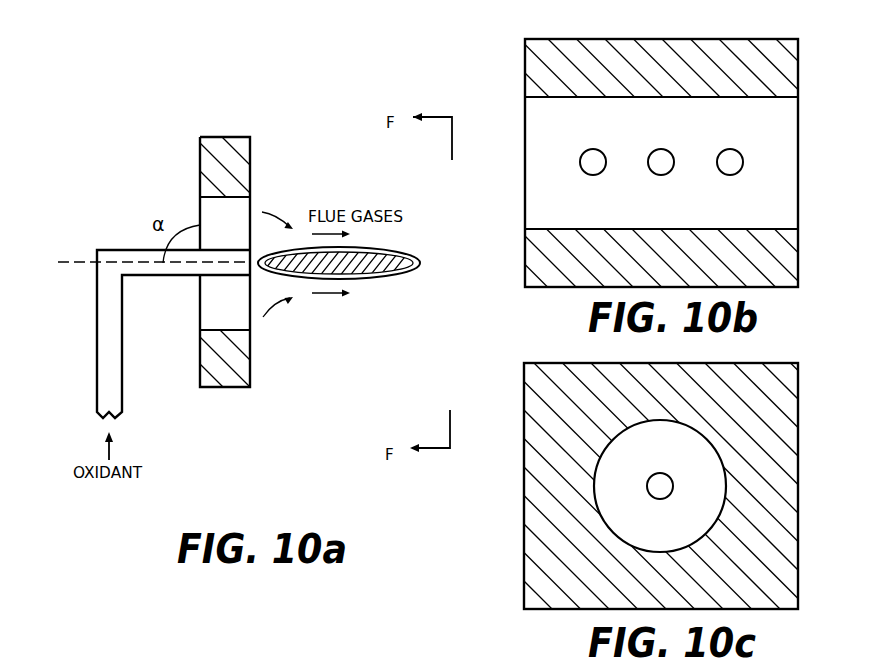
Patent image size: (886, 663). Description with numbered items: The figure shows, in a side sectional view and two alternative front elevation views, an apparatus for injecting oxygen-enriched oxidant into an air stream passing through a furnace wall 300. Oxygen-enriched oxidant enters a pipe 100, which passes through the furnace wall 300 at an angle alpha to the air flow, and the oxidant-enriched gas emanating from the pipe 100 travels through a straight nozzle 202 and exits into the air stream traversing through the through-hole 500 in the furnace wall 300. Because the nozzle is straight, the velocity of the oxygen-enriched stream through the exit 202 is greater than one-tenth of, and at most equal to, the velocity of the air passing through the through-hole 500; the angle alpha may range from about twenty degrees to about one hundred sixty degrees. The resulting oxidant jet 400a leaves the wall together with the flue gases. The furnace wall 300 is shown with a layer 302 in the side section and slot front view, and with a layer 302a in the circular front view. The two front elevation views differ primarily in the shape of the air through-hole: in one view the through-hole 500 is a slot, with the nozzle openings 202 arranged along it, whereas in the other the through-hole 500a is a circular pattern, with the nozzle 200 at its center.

In FIG. 10a, the pipe 100 is at (97, 333).
In FIG. 10c, the nozzle 200 is at (651, 476).
In FIG. 10a, the straight nozzle 202 is at (250, 250).
In FIG. 10b, the straight nozzle 202 is at (721, 152).
In FIG. 10a, the furnace wall 300 is at (222, 154).
In FIG. 10b, the furnace wall 300 is at (760, 39).
In FIG. 10c, the furnace wall 300 is at (760, 363).
In FIG. 10a, the refractory layer 302 is at (252, 144).
In FIG. 10b, the refractory layer 302 is at (782, 65).
In FIG. 10c, the refractory layer 302a is at (780, 390).
In FIG. 10a, the flame 400a is at (365, 266).
In FIG. 10a, the through-hole 500 is at (232, 325).
In FIG. 10b, the through-hole 500 is at (547, 229).
In FIG. 10c, the through-hole 500a is at (624, 545).